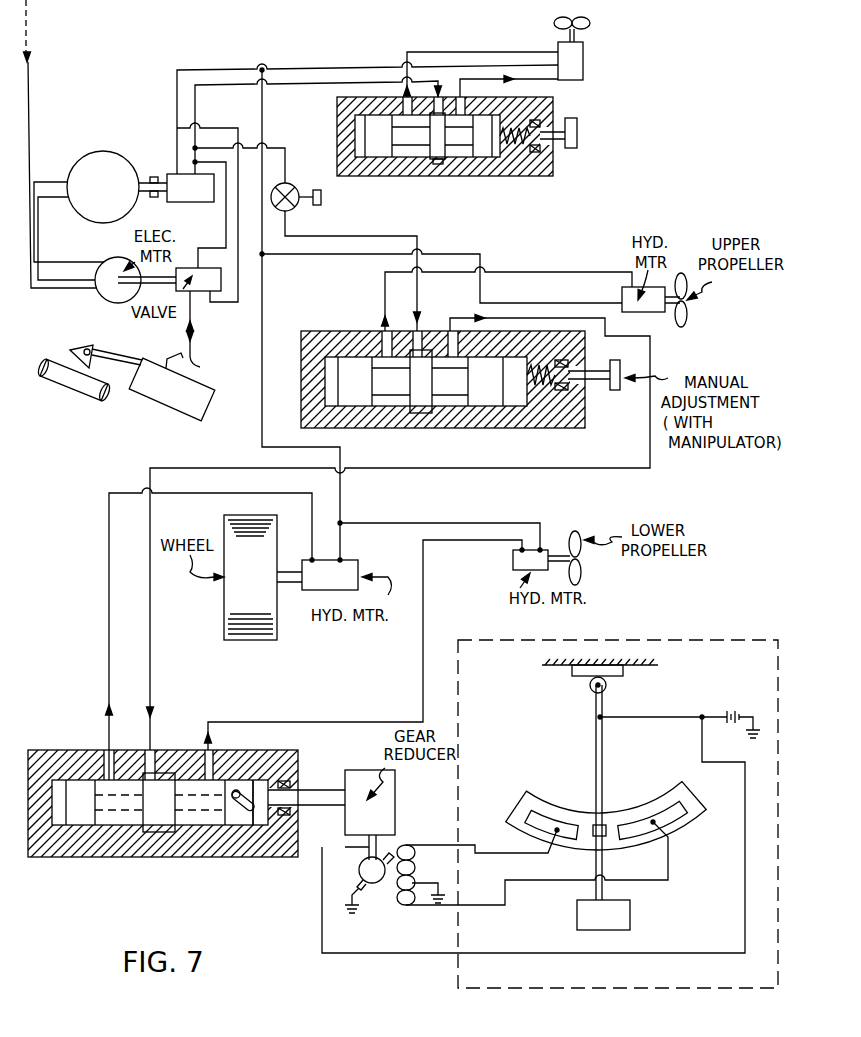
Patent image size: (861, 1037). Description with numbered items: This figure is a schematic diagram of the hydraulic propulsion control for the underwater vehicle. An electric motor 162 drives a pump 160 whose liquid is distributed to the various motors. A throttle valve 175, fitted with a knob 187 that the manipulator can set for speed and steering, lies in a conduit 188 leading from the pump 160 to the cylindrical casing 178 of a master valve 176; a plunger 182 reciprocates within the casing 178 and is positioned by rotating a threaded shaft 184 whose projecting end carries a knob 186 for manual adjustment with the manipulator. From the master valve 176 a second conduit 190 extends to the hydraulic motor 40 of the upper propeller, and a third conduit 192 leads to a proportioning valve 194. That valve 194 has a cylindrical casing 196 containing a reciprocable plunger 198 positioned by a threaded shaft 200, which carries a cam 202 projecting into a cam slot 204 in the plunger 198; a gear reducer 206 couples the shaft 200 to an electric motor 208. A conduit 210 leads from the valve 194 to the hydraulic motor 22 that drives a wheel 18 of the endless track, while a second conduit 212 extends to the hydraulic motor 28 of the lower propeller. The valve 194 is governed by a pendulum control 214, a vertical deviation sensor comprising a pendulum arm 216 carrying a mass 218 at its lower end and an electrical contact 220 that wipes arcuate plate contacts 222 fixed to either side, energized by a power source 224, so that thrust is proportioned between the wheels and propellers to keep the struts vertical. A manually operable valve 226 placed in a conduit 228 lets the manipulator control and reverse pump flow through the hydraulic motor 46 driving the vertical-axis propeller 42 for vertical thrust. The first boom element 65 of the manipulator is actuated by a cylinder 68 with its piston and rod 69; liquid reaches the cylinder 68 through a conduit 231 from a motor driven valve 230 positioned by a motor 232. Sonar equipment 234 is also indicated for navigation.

The sonar equipment 234 is at (28, 50).
The electric motor 162 is at (95, 156).
The pump 160 is at (185, 204).
The conduit 228 is at (292, 86).
The propeller 42 is at (586, 28).
The hydraulic motor 46 is at (584, 72).
The manually operable valve 226 is at (485, 177).
The knob 187 is at (322, 197).
The throttle valve 175 is at (300, 208).
The conduit 188 is at (378, 236).
The conduit 190 is at (545, 272).
The hydraulic motor 40 is at (655, 313).
The master valve 176 is at (442, 373).
The knob 186 is at (613, 366).
The threaded shaft 184 is at (588, 380).
The cylindrical casing 178 is at (350, 429).
The plunger 182 is at (450, 388).
The conduit 192 is at (500, 470).
The motor 232 is at (112, 302).
The motor driven valve 230 is at (215, 292).
The conduit 231 is at (213, 336).
The piston and rod 69 is at (116, 364).
The first boom element 65 is at (78, 383).
The cylinder 68 is at (170, 398).
The hydraulic motor 22 is at (350, 572).
The wheel 18 is at (237, 612).
The hydraulic motor 28 is at (513, 558).
The conduit 210 is at (108, 642).
The conduit 212 is at (425, 627).
The proportioning valve 194 is at (199, 804).
The cam slot 204 is at (250, 790).
The threaded shaft 200 is at (320, 795).
The gear reducer 206 is at (385, 825).
The cylindrical casing 196 is at (65, 858).
The plunger 198 is at (158, 815).
The cam 202 is at (250, 812).
The electric motor 208 is at (381, 889).
The power source 224 is at (748, 712).
The pendulum arm 216 is at (605, 768).
The contact 222 is at (540, 815).
The electrical contact 220 is at (592, 827).
The mass 218 is at (632, 914).
The pendulum control 214 is at (515, 990).